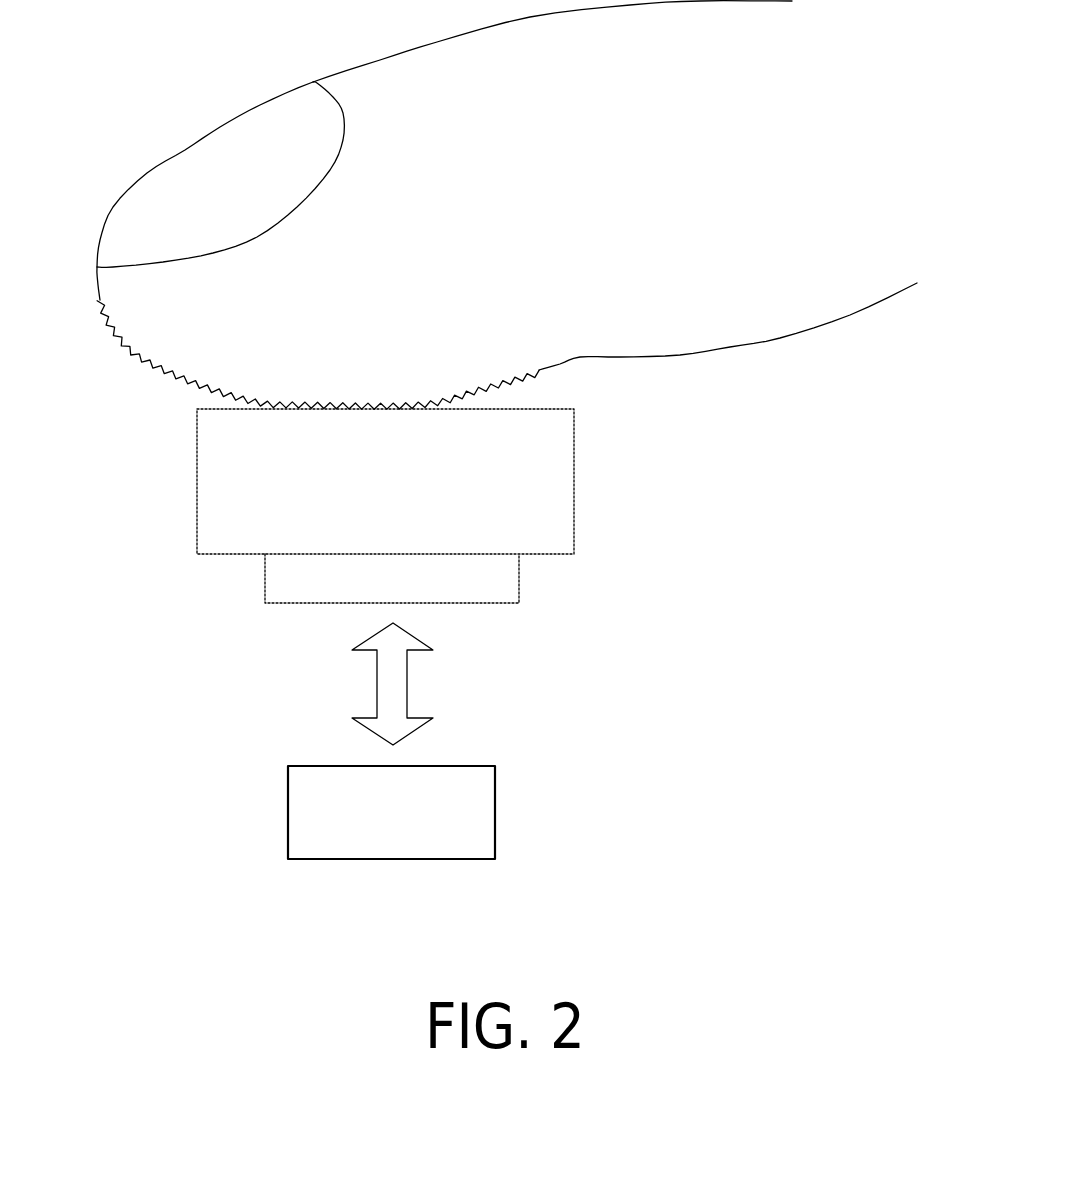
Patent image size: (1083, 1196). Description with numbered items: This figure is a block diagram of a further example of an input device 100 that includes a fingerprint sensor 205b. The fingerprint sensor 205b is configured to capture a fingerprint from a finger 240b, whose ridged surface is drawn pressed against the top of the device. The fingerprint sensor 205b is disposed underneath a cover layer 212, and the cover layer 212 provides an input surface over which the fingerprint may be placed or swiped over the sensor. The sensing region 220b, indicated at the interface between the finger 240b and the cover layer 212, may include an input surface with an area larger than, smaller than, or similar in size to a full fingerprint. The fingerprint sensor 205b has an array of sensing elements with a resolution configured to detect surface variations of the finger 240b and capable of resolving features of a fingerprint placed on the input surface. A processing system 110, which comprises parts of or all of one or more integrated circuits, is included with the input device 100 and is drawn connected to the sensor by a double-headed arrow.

The input device 100 is at (147, 79).
The sensing region 220b is at (145, 386).
The finger 240b is at (783, 338).
The cover layer 212 is at (574, 503).
The fingerprint sensor 205b is at (519, 591).
The processing system 110 is at (288, 818).